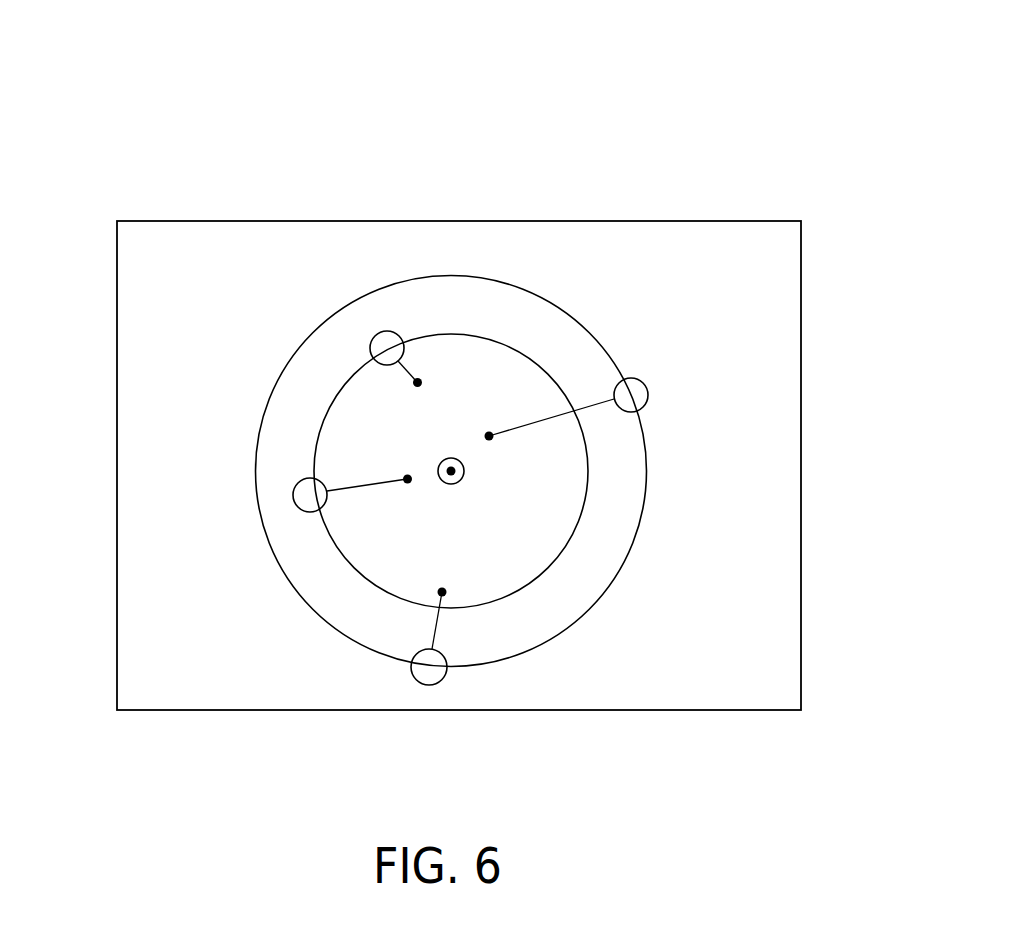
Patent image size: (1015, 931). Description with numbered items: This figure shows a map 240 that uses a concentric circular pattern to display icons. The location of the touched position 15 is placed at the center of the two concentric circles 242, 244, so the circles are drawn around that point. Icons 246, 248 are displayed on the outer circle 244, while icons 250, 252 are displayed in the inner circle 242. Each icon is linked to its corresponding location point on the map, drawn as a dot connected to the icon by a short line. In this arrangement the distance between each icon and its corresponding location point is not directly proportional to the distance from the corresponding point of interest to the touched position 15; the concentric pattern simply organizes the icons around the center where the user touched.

The map 240 is at (852, 122).
The circle 242 is at (513, 345).
The circle 244 is at (595, 335).
The icon 246 is at (648, 400).
The icon 248 is at (415, 682).
The icon 250 is at (293, 499).
The icon 252 is at (375, 331).
The touched position 15 is at (443, 458).